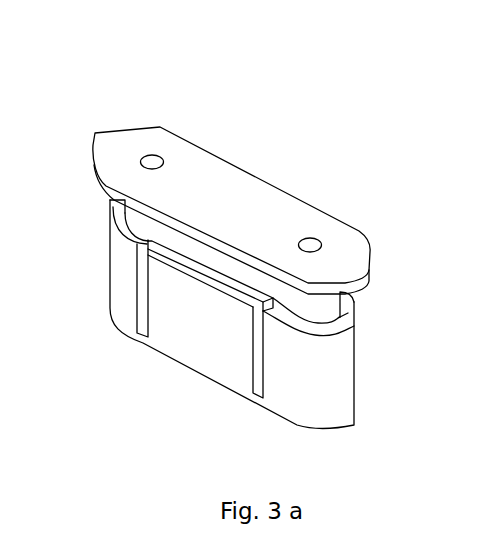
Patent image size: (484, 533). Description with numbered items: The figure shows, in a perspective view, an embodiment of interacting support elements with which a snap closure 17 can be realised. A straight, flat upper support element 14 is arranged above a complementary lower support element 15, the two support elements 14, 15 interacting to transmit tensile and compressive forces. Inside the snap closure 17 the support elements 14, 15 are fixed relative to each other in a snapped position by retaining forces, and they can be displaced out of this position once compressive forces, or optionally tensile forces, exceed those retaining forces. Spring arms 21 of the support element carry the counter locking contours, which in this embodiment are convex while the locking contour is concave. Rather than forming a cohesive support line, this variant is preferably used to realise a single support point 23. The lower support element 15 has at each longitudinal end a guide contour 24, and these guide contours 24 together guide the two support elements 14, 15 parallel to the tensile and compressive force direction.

The upper support element 14 is at (272, 175).
The lower support element 15 is at (100, 256).
The snap closure 17 is at (128, 98).
The spring arm 21 is at (198, 318).
The support point 23 is at (354, 172).
The guide contour 24 is at (116, 208).